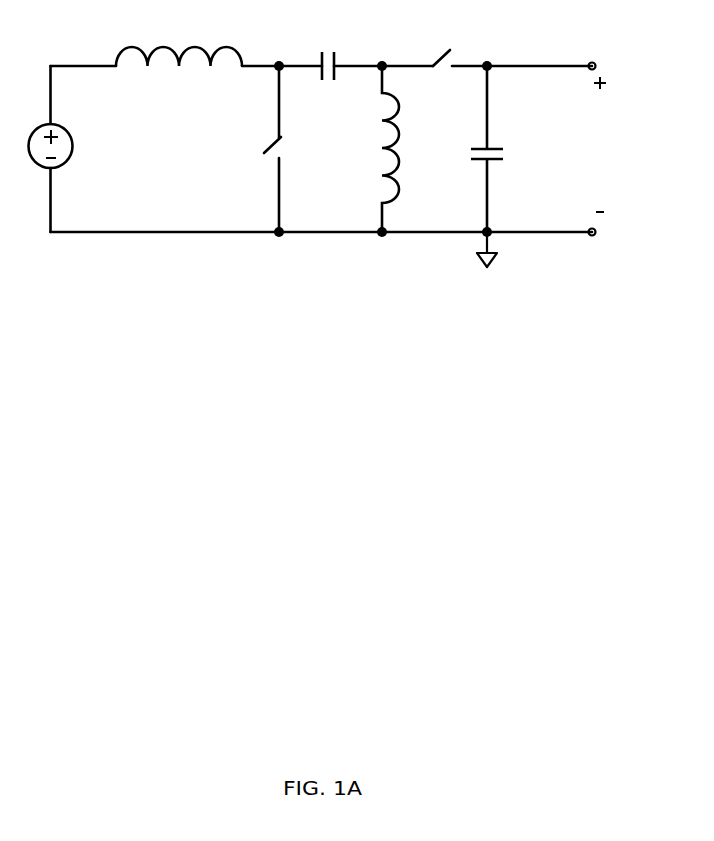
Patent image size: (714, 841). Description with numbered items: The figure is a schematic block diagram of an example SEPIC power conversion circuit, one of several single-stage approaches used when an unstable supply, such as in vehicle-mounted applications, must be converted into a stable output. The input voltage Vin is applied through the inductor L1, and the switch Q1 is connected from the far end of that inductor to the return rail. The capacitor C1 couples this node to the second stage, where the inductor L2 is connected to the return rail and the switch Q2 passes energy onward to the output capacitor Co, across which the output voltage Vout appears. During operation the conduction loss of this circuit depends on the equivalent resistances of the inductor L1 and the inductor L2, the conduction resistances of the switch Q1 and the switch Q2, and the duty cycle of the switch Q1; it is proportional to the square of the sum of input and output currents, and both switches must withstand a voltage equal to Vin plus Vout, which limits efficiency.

The inductor L1 is at (179, 45).
The capacitor C1 is at (328, 51).
The switch Q1 is at (288, 149).
The switch Q2 is at (441, 46).
The inductor L2 is at (406, 149).
The output capacitor Co is at (505, 149).
The input voltage Vin is at (68, 146).
The output voltage Vout is at (614, 149).